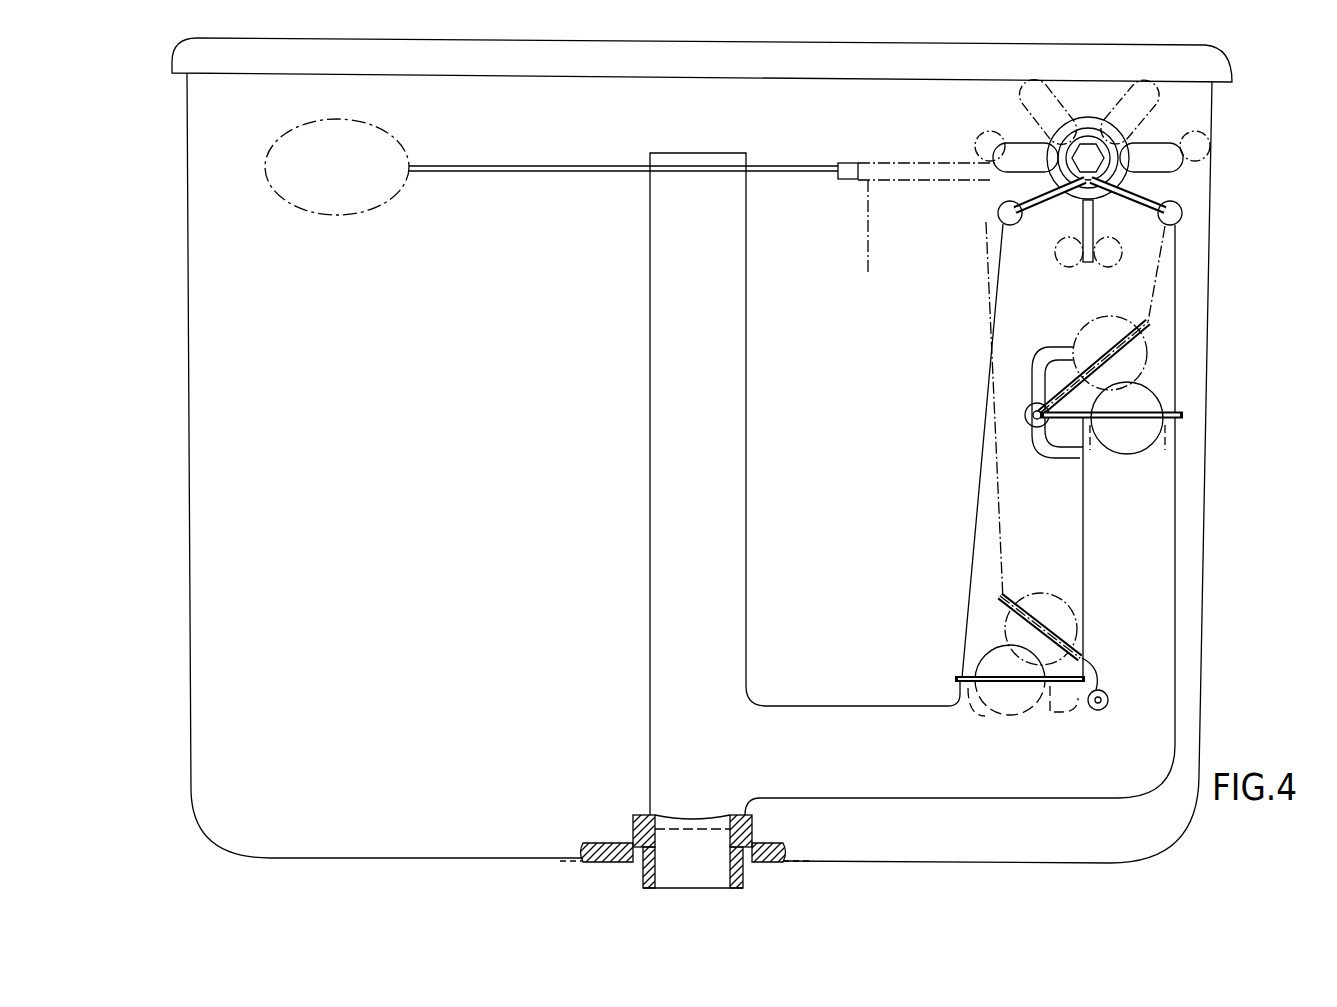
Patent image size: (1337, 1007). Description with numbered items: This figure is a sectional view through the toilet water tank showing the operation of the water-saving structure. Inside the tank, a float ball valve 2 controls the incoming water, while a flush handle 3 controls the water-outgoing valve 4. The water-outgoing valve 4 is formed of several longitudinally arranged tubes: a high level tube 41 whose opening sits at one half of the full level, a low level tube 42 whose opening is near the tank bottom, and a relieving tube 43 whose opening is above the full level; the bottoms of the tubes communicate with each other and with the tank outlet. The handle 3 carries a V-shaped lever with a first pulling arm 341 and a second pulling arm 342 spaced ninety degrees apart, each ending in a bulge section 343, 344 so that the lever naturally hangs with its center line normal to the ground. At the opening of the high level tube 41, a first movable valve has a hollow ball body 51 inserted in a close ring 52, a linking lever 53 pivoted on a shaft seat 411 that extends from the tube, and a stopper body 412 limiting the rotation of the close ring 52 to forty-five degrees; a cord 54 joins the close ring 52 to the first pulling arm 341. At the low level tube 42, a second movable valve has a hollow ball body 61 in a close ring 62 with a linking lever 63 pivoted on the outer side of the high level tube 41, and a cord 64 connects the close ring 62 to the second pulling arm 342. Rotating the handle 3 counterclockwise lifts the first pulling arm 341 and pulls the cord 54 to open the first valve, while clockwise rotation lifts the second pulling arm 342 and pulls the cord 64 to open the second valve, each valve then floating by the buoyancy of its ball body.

The float ball valve 2 is at (392, 190).
The flush handle 3 is at (1120, 140).
The first pulling arm 341 is at (1150, 195).
The second pulling arm 342 is at (990, 168).
The bulge section 343 is at (1182, 213).
The bulge section 344 is at (998, 215).
The water-outgoing valve 4 is at (812, 698).
The high level tube 41 is at (1176, 522).
The shaft seat 411 is at (1083, 458).
The stopper body 412 is at (1052, 348).
The low level tube 42 is at (962, 700).
The relieving tube 43 is at (746, 398).
The hollow ball body 51 is at (1160, 392).
The close ring 52 is at (1183, 415).
The linking lever 53 is at (1060, 432).
The cord 54 is at (1177, 340).
The hollow ball body 61 is at (992, 662).
The close ring 62 is at (962, 672).
The linking lever 63 is at (1078, 660).
The cord 64 is at (982, 422).